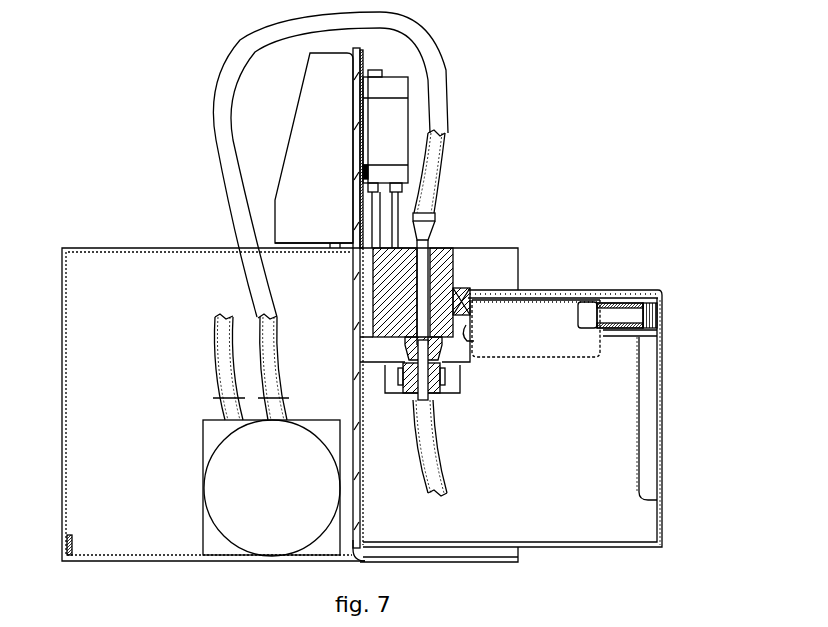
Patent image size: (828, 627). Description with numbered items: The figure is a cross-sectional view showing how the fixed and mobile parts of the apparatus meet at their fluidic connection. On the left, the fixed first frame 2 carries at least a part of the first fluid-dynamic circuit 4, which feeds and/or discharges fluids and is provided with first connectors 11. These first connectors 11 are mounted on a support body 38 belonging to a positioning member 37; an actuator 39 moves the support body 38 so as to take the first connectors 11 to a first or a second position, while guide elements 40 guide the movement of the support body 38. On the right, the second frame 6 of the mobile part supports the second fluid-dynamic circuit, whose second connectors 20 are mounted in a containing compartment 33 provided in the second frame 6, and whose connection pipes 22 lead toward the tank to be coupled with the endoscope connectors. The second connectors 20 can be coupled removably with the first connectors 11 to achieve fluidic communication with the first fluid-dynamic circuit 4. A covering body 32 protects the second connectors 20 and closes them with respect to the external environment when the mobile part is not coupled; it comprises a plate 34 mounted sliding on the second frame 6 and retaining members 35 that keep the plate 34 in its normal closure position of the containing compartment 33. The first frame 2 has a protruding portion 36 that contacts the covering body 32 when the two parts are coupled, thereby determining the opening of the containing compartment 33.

The first frame 2 is at (99, 250).
The first fluid-dynamic circuit 4 is at (228, 281).
The second frame 6 is at (662, 478).
The first connectors 11 is at (408, 352).
The second connectors 20 is at (429, 377).
The connection pipes 22 is at (440, 475).
The covering body 32 is at (560, 298).
The containing compartment 33 is at (466, 332).
The plate 34 is at (537, 299).
The retaining members 35 is at (630, 306).
The protruding portion 36 is at (463, 299).
The positioning member 37 is at (448, 211).
The support body 38 is at (384, 302).
The actuator 39 is at (394, 120).
The guide elements 40 is at (361, 224).